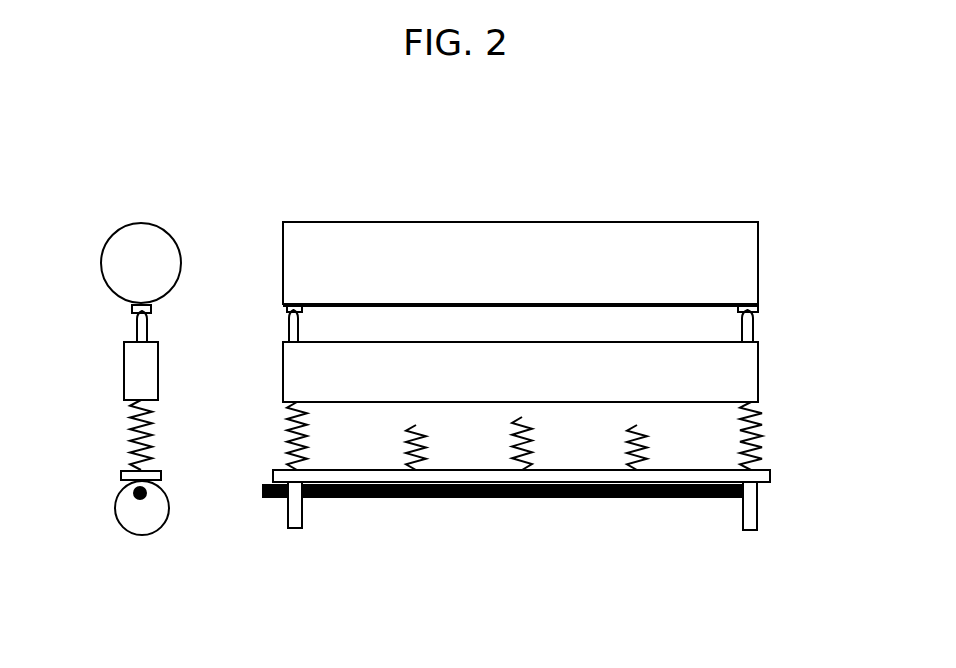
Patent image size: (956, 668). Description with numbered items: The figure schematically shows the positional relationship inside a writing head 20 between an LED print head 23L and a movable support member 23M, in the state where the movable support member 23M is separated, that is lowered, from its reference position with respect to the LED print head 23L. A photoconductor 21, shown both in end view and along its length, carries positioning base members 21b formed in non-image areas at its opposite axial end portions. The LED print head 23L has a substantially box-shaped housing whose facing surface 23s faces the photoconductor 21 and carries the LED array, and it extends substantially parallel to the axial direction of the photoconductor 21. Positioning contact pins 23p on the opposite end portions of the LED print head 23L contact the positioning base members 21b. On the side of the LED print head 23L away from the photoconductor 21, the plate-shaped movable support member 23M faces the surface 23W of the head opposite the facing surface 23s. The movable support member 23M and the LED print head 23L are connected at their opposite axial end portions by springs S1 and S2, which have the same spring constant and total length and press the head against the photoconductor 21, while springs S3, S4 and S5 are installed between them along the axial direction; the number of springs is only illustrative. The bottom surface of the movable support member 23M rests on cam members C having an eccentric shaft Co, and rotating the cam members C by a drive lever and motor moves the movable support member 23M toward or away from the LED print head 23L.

The pendulum unit 20 is at (740, 196).
The photoconductor 21 is at (143, 222).
The positioning base member 21b is at (285, 308).
The positioning contact pin 23p is at (288, 335).
The LED print head 23L is at (122, 372).
The facing surface 23s is at (394, 341).
The surface 23W is at (448, 402).
The movable support member 23M is at (770, 476).
The spring S1 is at (308, 445).
The spring S2 is at (762, 448).
The spring S3 is at (533, 450).
The spring S4 is at (428, 446).
The spring S5 is at (648, 446).
The eccentric shaft Co is at (147, 496).
The cam member C is at (141, 520).